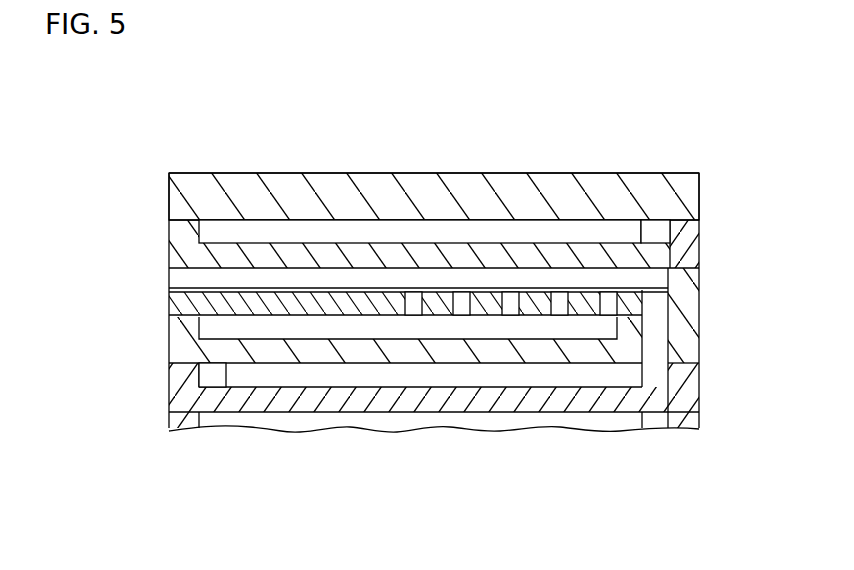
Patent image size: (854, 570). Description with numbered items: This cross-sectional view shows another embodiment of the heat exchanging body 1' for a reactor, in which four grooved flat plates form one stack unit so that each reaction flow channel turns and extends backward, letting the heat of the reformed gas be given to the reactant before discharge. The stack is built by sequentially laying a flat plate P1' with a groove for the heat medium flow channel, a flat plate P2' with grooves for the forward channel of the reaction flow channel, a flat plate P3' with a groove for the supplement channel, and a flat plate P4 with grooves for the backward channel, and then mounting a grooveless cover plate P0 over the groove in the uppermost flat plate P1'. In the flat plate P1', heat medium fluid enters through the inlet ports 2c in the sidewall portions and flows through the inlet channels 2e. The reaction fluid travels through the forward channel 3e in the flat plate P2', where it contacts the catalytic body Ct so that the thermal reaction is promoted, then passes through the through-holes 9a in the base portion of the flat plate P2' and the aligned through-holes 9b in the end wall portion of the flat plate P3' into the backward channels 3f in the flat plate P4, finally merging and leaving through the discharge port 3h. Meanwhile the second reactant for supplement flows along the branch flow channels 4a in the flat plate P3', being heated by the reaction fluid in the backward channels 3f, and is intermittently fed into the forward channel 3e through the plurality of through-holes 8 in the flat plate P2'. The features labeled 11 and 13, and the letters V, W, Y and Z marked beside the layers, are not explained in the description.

The heat exchanging body 1' is at (386, 279).
The inlet channels 2e is at (217, 232).
The inlet ports 2c is at (663, 228).
The insulating layer 11 is at (395, 257).
The cavity space 13 is at (463, 230).
The catalytic body Ct is at (537, 278).
The flat plate (cover body) P0 is at (700, 187).
The flat plate P1' is at (428, 326).
The flat plate P2' is at (377, 336).
The flat plate P3' is at (390, 384).
The flat plate P4 is at (688, 398).
The forward channel 3e is at (200, 272).
The discharge port 3h is at (196, 342).
The backward channels 3f is at (293, 378).
The branch flow channels 4a is at (372, 333).
The through-holes 8 is at (608, 317).
The through-holes 9a is at (662, 302).
The through-holes 9b is at (662, 333).
The section line V is at (107, 225).
The section line W is at (107, 272).
The section line Y is at (107, 320).
The section line Z is at (107, 367).